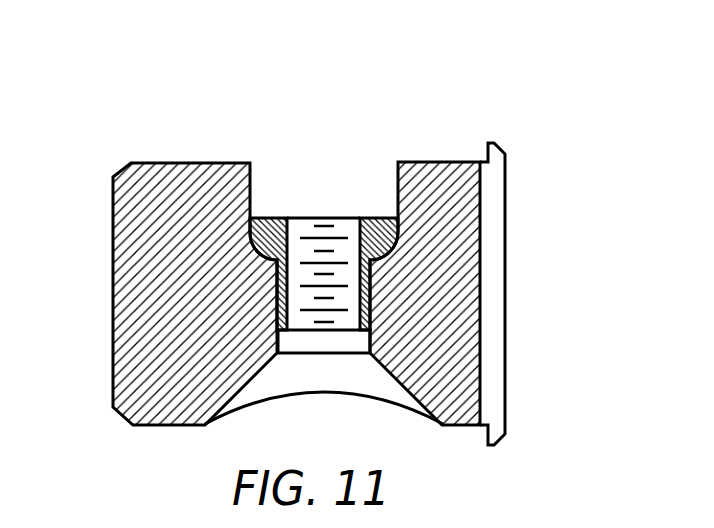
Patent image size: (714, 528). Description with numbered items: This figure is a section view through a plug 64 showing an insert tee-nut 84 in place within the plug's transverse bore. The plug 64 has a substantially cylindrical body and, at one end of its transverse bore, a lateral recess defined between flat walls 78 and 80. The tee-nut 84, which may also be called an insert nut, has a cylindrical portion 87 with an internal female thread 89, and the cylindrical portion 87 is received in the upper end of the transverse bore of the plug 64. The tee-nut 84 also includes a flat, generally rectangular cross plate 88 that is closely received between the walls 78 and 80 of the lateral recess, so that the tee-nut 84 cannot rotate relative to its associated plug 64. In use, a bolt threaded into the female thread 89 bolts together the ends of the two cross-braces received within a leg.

The plug 64 is at (453, 317).
The flat wall 78 is at (398, 173).
The flat wall 80 is at (250, 173).
The tee-nut 84 is at (427, 190).
The cylindrical portion 87 is at (372, 298).
The cross plate 88 is at (375, 217).
The internal female thread 89 is at (307, 273).